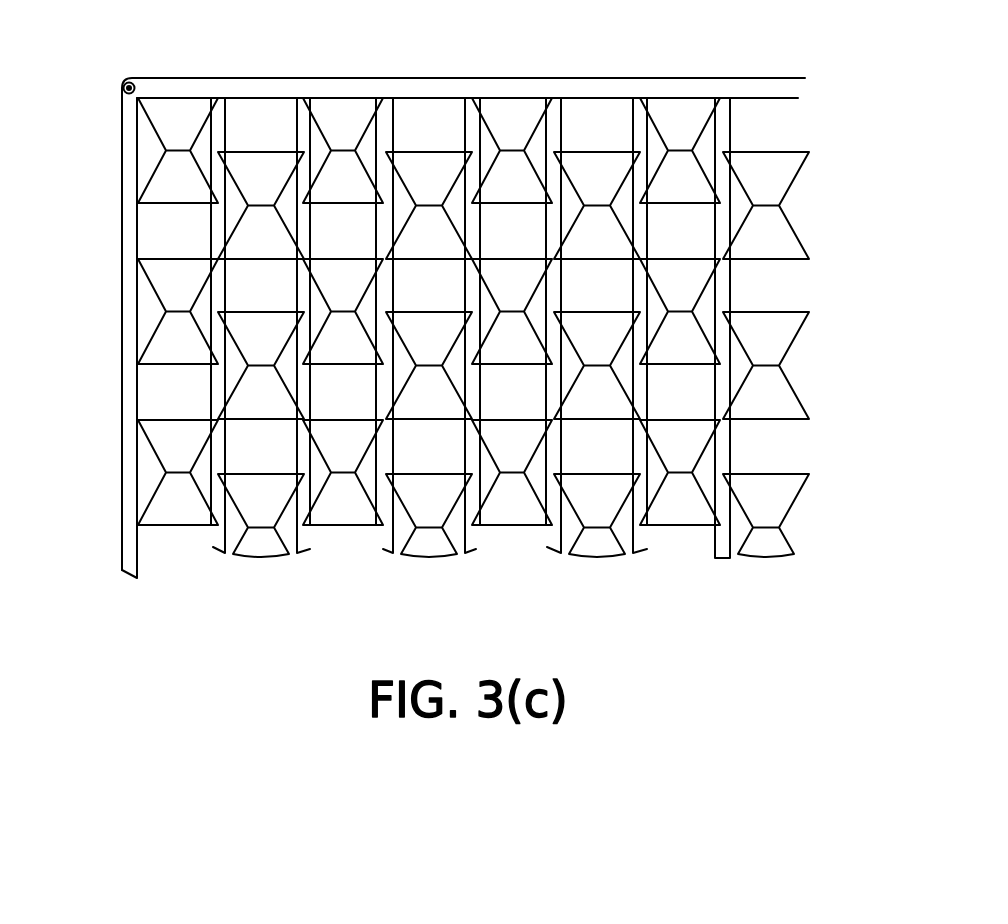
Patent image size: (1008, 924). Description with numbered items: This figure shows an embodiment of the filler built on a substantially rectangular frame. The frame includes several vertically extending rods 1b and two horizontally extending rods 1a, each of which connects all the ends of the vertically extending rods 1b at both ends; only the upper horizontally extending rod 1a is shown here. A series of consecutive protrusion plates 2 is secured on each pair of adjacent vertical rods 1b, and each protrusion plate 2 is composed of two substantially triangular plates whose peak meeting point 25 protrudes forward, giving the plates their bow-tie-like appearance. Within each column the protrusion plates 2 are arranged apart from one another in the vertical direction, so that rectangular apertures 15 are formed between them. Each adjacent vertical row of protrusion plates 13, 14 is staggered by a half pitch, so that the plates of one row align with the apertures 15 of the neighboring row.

The horizontally extending rod 1a is at (508, 85).
The vertically extending rod 1b is at (131, 287).
The protrusion plate 2 is at (600, 200).
The vertical row of protrusion plates 13 is at (257, 105).
The vertical row of protrusion plates 14 is at (340, 104).
The rectangular aperture 15 is at (597, 292).
The peak meeting point 25 is at (248, 207).